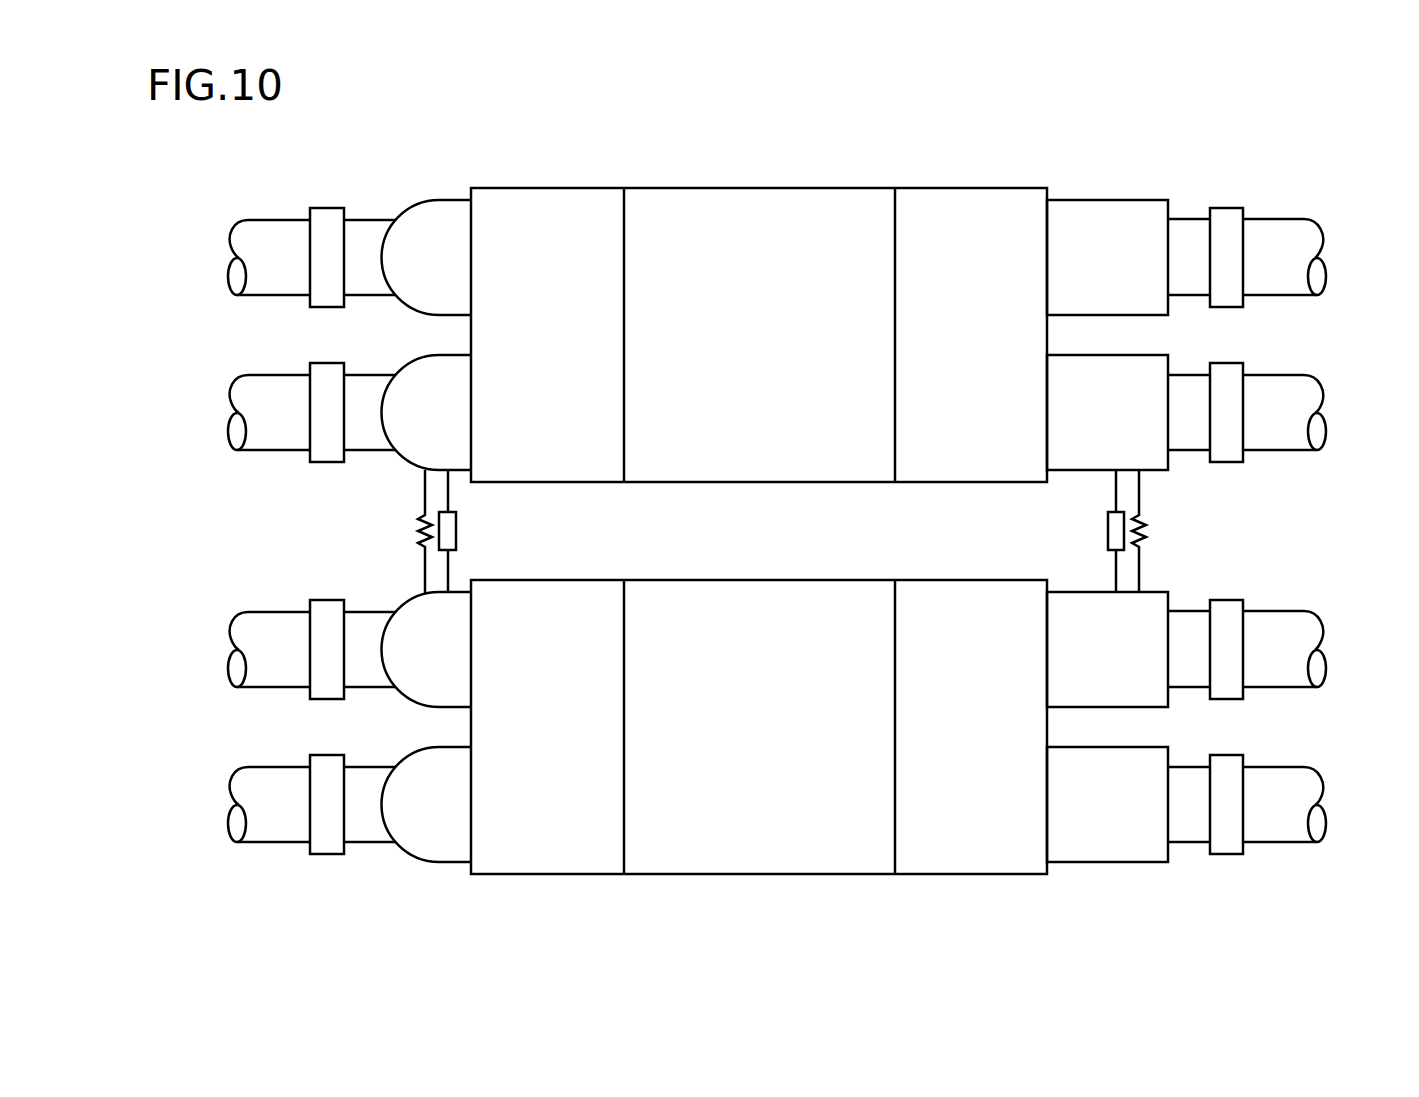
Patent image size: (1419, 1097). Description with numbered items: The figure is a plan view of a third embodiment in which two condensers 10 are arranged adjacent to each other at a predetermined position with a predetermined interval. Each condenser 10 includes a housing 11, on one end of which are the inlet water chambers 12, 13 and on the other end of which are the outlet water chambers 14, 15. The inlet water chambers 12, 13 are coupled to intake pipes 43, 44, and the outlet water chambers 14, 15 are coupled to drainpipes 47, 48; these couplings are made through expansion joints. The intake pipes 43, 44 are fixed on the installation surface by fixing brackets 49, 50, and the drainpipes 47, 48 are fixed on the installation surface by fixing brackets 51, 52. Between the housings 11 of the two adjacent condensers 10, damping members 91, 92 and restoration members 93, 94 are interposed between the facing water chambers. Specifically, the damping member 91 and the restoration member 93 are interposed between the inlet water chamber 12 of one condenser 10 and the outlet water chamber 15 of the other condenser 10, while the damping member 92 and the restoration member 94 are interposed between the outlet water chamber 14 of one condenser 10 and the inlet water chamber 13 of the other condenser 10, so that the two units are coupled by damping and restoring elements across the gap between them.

The condenser 10 is at (773, 122).
The housing 11 is at (565, 198).
The inlet water chamber 12 is at (1125, 452).
The inlet water chamber 13 is at (445, 215).
The outlet water chamber 14 is at (420, 448).
The outlet water chamber 15 is at (1115, 218).
The intake pipe 43 is at (1297, 397).
The intake pipe 44 is at (262, 232).
The drainpipe 47 is at (255, 398).
The drainpipe 48 is at (1290, 228).
The fixing bracket 49 is at (1228, 452).
The fixing bracket 50 is at (322, 215).
The fixing bracket 51 is at (325, 450).
The fixing bracket 52 is at (1222, 222).
The damping member 91 is at (1108, 530).
The damping member 92 is at (452, 530).
The restoration member 93 is at (1147, 527).
The restoration member 94 is at (420, 525).